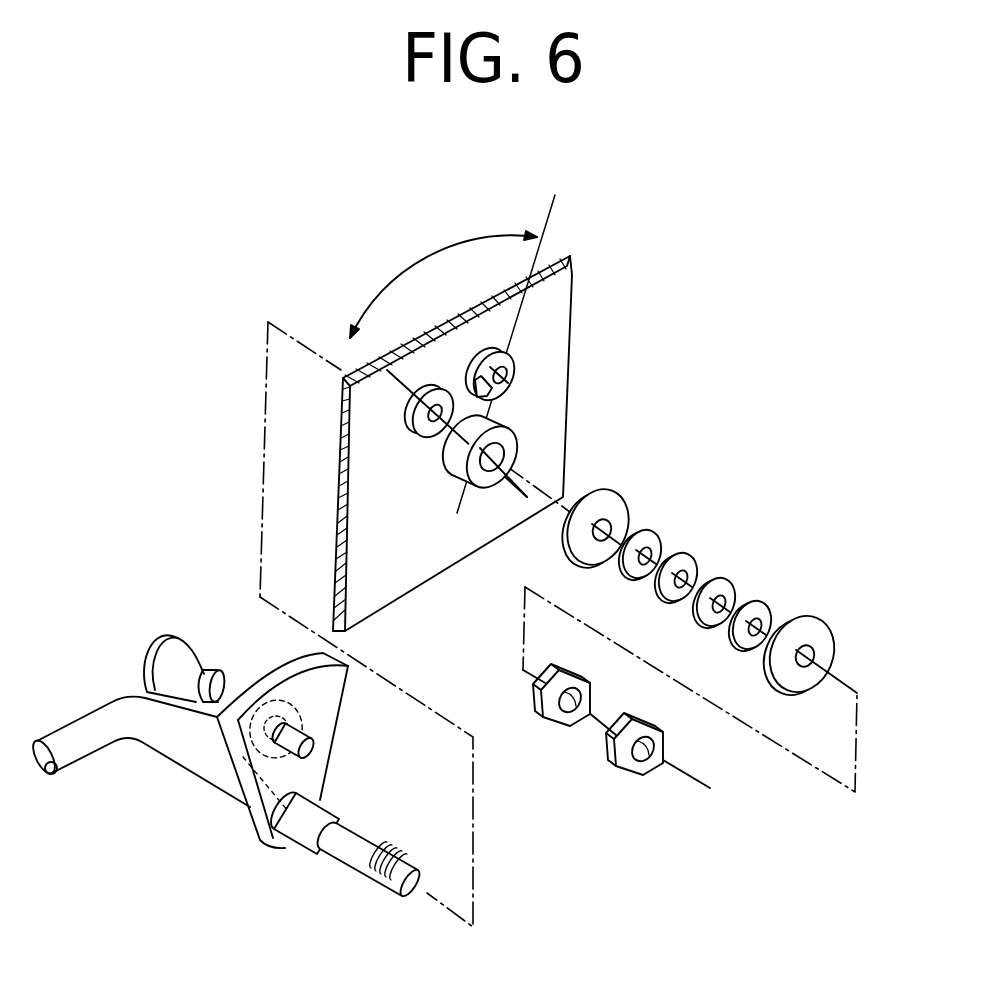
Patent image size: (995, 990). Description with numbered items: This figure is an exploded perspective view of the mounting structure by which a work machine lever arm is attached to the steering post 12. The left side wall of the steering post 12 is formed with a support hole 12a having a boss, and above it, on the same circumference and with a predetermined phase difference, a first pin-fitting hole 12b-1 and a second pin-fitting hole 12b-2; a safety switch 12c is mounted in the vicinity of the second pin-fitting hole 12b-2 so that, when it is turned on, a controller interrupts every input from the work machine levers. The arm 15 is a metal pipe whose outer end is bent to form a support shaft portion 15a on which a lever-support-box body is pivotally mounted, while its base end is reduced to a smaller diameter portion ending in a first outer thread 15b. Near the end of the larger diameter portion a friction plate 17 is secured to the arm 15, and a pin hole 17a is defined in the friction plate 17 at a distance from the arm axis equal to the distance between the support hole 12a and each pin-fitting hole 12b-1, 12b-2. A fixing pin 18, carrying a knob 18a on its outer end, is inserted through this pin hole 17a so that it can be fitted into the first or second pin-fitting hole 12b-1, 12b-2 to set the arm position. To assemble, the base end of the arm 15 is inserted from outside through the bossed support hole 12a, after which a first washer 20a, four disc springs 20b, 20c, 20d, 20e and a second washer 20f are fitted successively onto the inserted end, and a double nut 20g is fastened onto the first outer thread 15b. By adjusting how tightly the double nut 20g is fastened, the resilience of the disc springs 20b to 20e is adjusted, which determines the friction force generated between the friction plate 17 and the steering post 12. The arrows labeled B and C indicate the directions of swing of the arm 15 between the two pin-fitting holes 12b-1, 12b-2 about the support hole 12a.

The steering post 12 is at (576, 291).
The support hole having a boss 12a is at (512, 434).
The first pin-fitting hole 12b-1 is at (417, 421).
The second pin-fitting hole 12b-2 is at (512, 372).
The safety switch 12c is at (478, 378).
The arm 15 is at (85, 728).
The support shaft portion 15a is at (189, 770).
The first outer thread 15b is at (387, 891).
The friction plate 17 is at (328, 730).
The pin hole 17a is at (313, 732).
The fixing pin 18 is at (303, 758).
The knob 18a is at (182, 648).
The first washer 20a is at (630, 503).
The disc spring 20b is at (662, 542).
The disc spring 20c is at (697, 562).
The disc spring 20d is at (727, 580).
The disc spring 20e is at (762, 603).
The second washer 20f is at (828, 624).
The double nut 20g is at (556, 732).
The rotation direction B is at (347, 366).
The rotation direction C is at (511, 336).